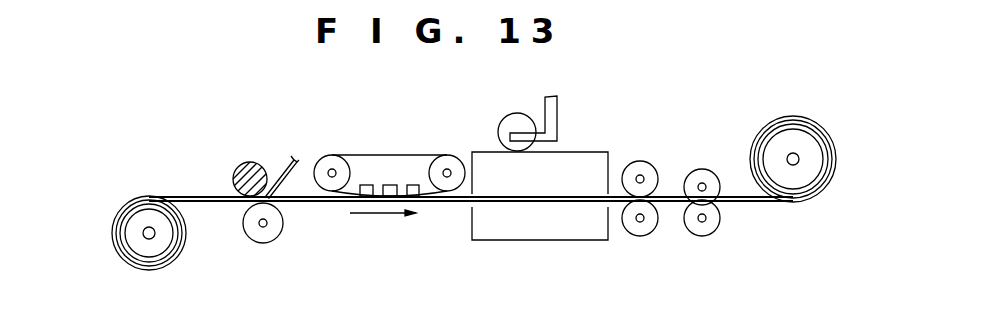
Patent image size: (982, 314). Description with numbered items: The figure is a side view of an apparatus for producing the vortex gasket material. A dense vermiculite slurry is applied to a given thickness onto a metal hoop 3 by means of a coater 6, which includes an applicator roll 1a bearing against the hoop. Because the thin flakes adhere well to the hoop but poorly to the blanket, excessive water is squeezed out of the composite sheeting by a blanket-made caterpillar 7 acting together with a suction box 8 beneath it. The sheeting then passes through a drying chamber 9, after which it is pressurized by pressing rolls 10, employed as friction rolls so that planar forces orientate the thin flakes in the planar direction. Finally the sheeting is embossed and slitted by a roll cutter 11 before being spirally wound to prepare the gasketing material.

The metal hoop 3 is at (190, 197).
The adhesive applicator roller 1a is at (237, 168).
The coater 6 is at (254, 179).
The blanket-made caterpillar 7 is at (369, 155).
The suction box 8 is at (390, 185).
The drying chamber 9 is at (578, 151).
The pressing rolls 10 is at (642, 160).
The roll cutter 11 is at (698, 168).